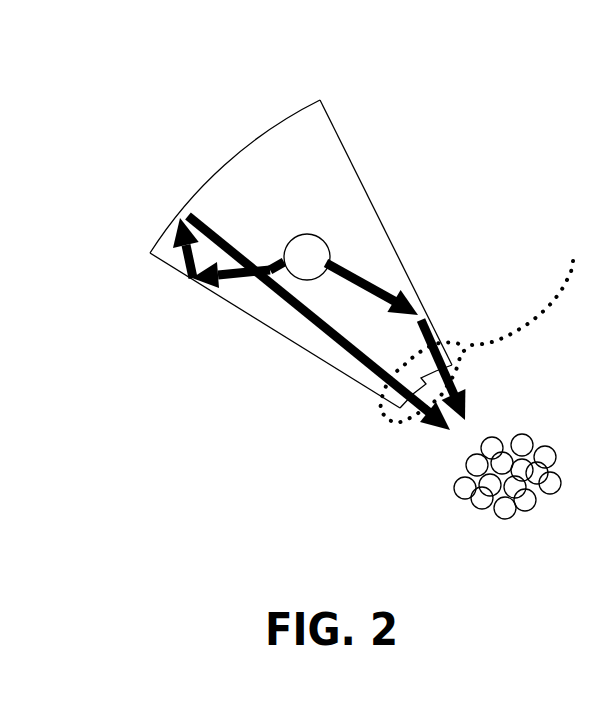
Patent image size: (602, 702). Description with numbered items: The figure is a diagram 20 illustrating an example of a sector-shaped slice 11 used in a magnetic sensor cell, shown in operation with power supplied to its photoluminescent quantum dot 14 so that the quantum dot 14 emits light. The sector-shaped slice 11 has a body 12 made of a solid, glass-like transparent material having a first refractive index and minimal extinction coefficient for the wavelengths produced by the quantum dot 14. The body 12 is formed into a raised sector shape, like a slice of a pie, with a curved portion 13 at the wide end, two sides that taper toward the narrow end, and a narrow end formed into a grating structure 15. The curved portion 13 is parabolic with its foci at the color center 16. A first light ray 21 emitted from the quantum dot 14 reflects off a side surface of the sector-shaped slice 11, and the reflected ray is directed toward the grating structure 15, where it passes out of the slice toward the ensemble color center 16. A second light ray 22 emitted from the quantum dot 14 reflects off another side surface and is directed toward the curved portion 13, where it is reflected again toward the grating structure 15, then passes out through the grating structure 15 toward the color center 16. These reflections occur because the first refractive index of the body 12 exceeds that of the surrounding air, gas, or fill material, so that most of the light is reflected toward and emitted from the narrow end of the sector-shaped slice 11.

The diagram 20 is at (201, 25).
The sector-shaped slice 11 is at (309, 234).
The body 12 is at (340, 190).
The curved portion 13 is at (233, 152).
The photoluminescent quantum dot 14 is at (307, 263).
The grating structure 15 is at (486, 324).
The ensemble color center 16 is at (483, 513).
The first light ray 21 is at (370, 275).
The second light ray 22 is at (237, 283).